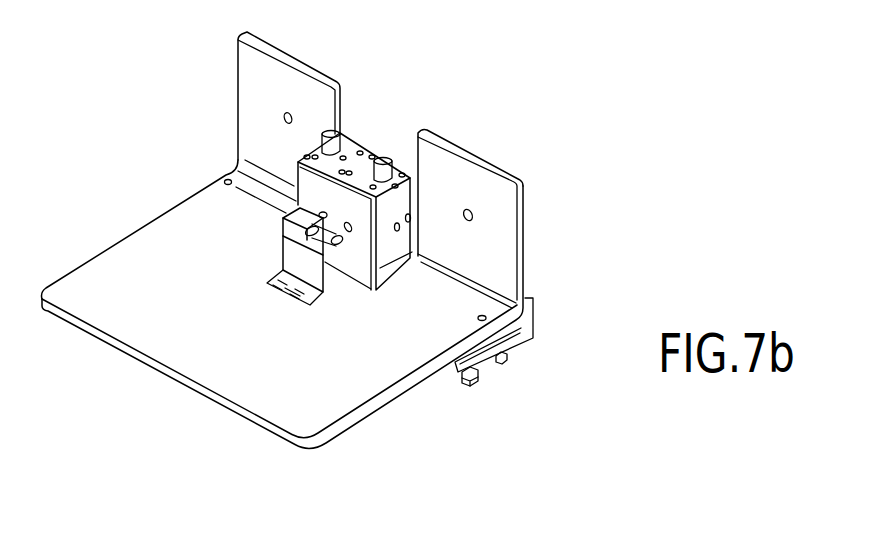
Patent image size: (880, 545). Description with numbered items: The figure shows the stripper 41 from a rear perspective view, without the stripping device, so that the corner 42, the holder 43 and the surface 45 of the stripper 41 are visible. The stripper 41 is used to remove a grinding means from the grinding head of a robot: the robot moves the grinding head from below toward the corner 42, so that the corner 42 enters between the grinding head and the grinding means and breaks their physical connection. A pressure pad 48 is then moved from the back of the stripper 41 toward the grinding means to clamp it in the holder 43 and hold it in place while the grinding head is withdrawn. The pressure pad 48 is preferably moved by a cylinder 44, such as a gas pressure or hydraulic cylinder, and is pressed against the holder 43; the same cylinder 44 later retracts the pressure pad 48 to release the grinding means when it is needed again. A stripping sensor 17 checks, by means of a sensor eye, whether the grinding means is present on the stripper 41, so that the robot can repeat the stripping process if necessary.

The stripping sensor 17 is at (285, 215).
The stripper 41 is at (185, 420).
The corner 42 is at (457, 364).
The holder 43 is at (522, 330).
The cylinder 44 is at (400, 200).
The surface 45 is at (403, 400).
The pressure pad 48 is at (423, 258).